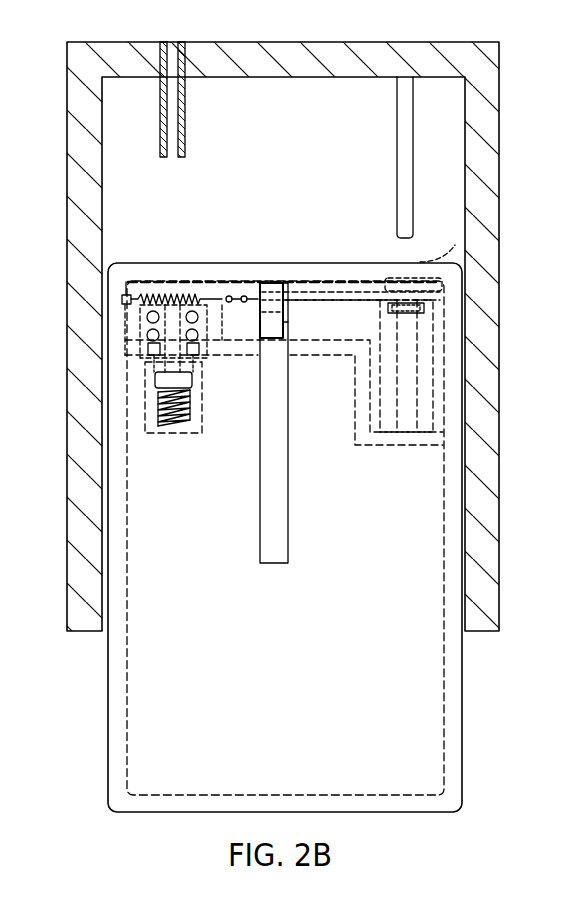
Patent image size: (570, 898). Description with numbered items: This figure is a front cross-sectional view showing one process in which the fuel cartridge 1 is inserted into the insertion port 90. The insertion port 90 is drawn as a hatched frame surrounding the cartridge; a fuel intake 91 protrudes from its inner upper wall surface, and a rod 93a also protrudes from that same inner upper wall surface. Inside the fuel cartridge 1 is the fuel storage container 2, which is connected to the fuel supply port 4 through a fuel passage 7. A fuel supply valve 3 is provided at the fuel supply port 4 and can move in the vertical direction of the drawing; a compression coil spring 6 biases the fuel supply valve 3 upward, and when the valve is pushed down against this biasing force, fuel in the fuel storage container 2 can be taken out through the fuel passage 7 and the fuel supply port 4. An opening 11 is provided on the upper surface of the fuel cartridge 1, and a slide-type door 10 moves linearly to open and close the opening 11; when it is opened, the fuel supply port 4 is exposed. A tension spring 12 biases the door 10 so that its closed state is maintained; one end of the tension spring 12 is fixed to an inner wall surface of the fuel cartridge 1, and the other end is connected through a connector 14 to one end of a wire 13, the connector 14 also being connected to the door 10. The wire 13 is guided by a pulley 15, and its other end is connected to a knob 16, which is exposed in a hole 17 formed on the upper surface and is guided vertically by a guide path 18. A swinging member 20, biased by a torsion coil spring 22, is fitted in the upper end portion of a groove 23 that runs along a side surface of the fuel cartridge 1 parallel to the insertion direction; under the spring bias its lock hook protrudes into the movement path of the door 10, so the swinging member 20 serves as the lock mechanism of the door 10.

The fuel cartridge 1 is at (464, 761).
The fuel storage container 2 is at (146, 721).
The fuel supply valve 3 is at (147, 323).
The fuel supply port 4 is at (125, 303).
The compression coil spring 6 is at (160, 407).
The fuel passage 7 is at (150, 372).
The slide-type door 10 is at (199, 292).
The opening 11 is at (140, 282).
The tension spring 12 is at (165, 298).
The wire 13 is at (313, 297).
The connector 14 is at (238, 290).
The pulley 15 is at (385, 290).
The knob 16 is at (422, 324).
The hole 17 is at (455, 245).
The guide path 18 is at (420, 370).
The swinging member 20 is at (272, 284).
The torsion coil spring 22 is at (285, 325).
The groove 23 is at (260, 507).
The insertion port 90 is at (476, 35).
The fuel intake 91 is at (160, 123).
The rod 93a is at (410, 108).